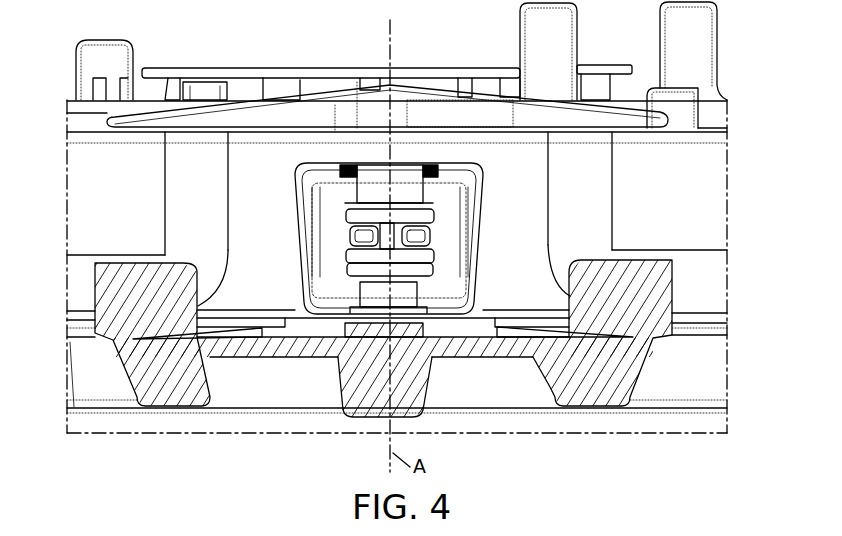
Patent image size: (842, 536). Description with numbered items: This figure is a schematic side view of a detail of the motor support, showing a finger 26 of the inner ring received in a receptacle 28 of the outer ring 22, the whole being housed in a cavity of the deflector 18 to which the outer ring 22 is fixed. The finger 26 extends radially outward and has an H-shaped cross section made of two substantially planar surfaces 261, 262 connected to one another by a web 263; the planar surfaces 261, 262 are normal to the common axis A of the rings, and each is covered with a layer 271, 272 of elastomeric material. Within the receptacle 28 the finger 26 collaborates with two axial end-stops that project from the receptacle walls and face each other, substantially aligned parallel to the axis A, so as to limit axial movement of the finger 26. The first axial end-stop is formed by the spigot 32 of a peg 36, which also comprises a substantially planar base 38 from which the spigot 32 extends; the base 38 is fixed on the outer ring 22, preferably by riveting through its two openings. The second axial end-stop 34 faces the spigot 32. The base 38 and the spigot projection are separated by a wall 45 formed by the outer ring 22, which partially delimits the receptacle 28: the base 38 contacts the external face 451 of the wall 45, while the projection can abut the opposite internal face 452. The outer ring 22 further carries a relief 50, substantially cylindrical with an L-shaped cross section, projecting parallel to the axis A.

The deflector 18 is at (654, 317).
The outer ring 22 is at (587, 175).
The finger 26 is at (268, 359).
The planar surface 261 is at (365, 219).
The planar surface 262 is at (367, 265).
The web 263 is at (368, 245).
The layer of elastomeric material 271 is at (348, 215).
The layer of elastomeric material 272 is at (427, 268).
The receptacle 28 is at (425, 245).
The spigot 32 is at (367, 180).
The axial end-stop 34 is at (403, 300).
The peg 36 is at (218, 97).
The base 38 is at (445, 112).
The wall 45 is at (385, 150).
The external face 451 is at (352, 123).
The internal face 452 is at (437, 177).
The relief 50 is at (677, 113).